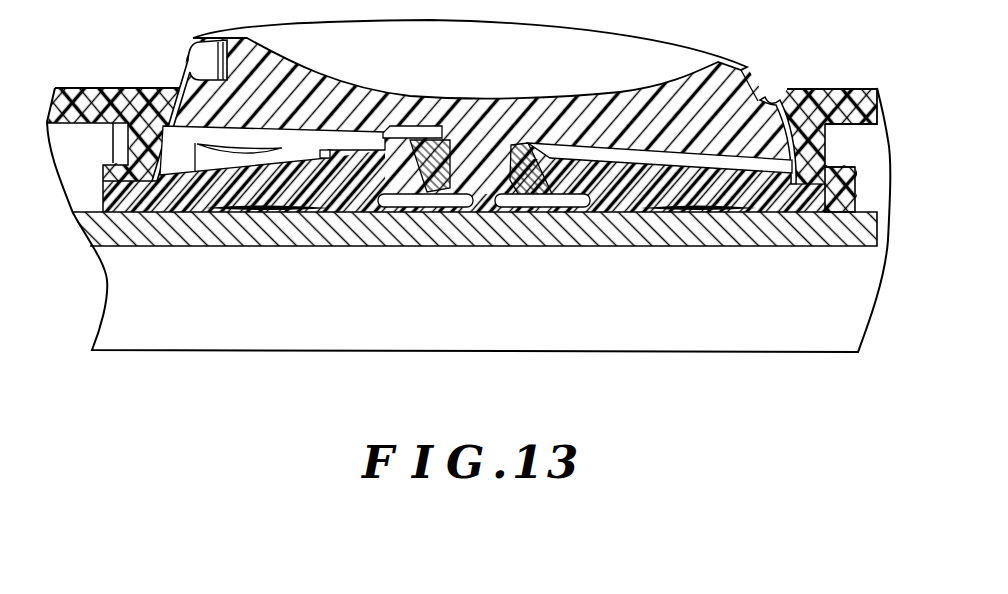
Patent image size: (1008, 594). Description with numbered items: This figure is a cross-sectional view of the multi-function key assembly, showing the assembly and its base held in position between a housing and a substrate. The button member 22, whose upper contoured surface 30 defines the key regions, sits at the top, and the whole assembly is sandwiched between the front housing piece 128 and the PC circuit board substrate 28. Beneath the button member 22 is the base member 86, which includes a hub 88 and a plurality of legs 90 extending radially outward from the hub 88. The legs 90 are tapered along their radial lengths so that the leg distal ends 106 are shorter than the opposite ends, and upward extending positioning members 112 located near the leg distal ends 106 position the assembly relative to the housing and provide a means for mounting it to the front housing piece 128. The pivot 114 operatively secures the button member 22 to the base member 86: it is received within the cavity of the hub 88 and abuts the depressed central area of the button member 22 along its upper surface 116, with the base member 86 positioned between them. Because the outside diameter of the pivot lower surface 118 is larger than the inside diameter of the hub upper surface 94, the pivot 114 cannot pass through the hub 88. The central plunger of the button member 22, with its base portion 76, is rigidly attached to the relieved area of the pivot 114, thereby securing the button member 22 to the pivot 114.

The button member 22 is at (697, 44).
The PC circuit board substrate 28 is at (868, 238).
The upper contoured surface 30 is at (128, 140).
The base portion 76 is at (547, 143).
The base member 86 is at (337, 195).
The hub 88 is at (393, 194).
The legs 90 is at (692, 192).
The upper surface 94 is at (415, 128).
The leg distal ends 106 is at (800, 200).
The upward extending positioning members 112 is at (855, 183).
The pivot 114 is at (539, 190).
The upper surface 116 is at (513, 146).
The lower surface 118 is at (420, 193).
The front housing piece 128 is at (831, 100).